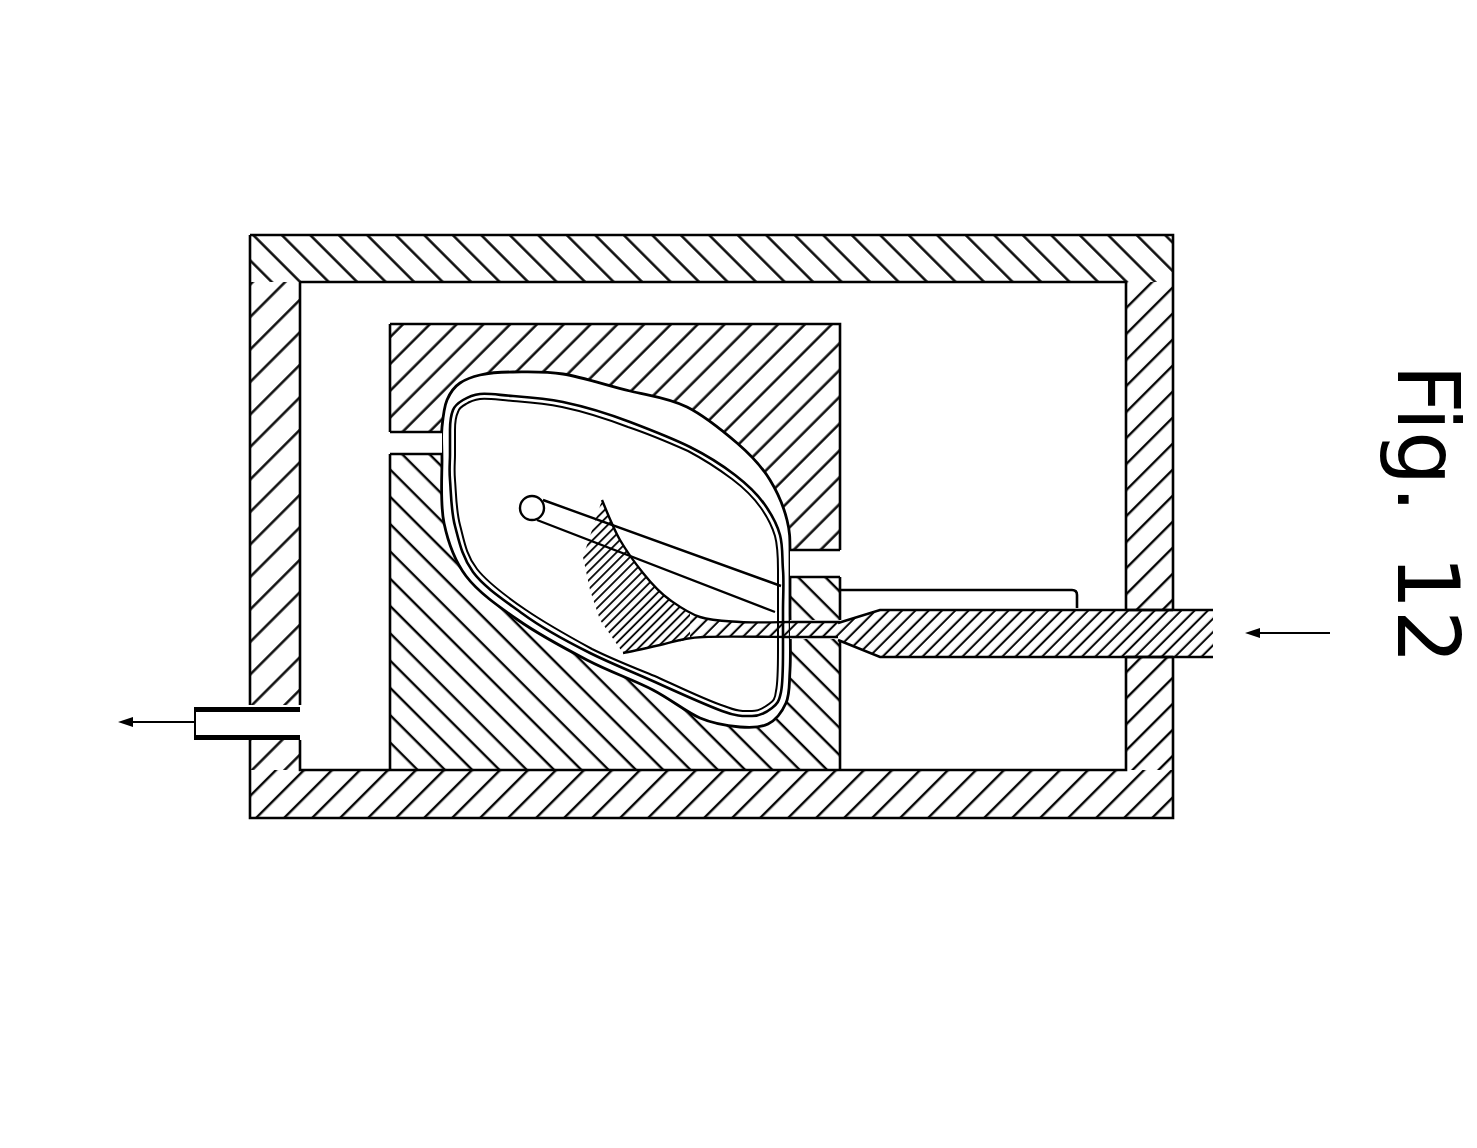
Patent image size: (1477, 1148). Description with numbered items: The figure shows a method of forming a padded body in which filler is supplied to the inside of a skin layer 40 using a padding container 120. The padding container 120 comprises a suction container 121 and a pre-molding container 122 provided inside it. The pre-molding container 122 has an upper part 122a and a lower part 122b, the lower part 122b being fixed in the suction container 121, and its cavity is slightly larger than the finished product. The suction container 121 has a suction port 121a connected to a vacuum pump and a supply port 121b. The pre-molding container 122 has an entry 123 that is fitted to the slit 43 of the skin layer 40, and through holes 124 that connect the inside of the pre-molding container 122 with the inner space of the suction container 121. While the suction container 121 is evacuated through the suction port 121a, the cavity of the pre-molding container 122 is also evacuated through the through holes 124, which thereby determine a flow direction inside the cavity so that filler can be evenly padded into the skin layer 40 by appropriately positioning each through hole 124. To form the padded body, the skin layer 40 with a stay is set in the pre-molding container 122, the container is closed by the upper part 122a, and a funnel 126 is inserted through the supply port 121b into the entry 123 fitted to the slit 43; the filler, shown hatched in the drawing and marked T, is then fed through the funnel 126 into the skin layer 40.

The padding container 120 is at (945, 204).
The suction container 121 is at (1160, 320).
The suction port 121a is at (213, 737).
The supply port 121b is at (1178, 608).
The pre-molding container 122 is at (486, 462).
The upper part 122a is at (403, 350).
The lower part 122b is at (403, 518).
The entry 123 is at (837, 643).
The through holes 124 is at (397, 443).
The funnel 126 is at (1080, 660).
The skin layer 40 is at (690, 709).
The slit 43 is at (768, 640).
The feed tube T is at (1192, 640).